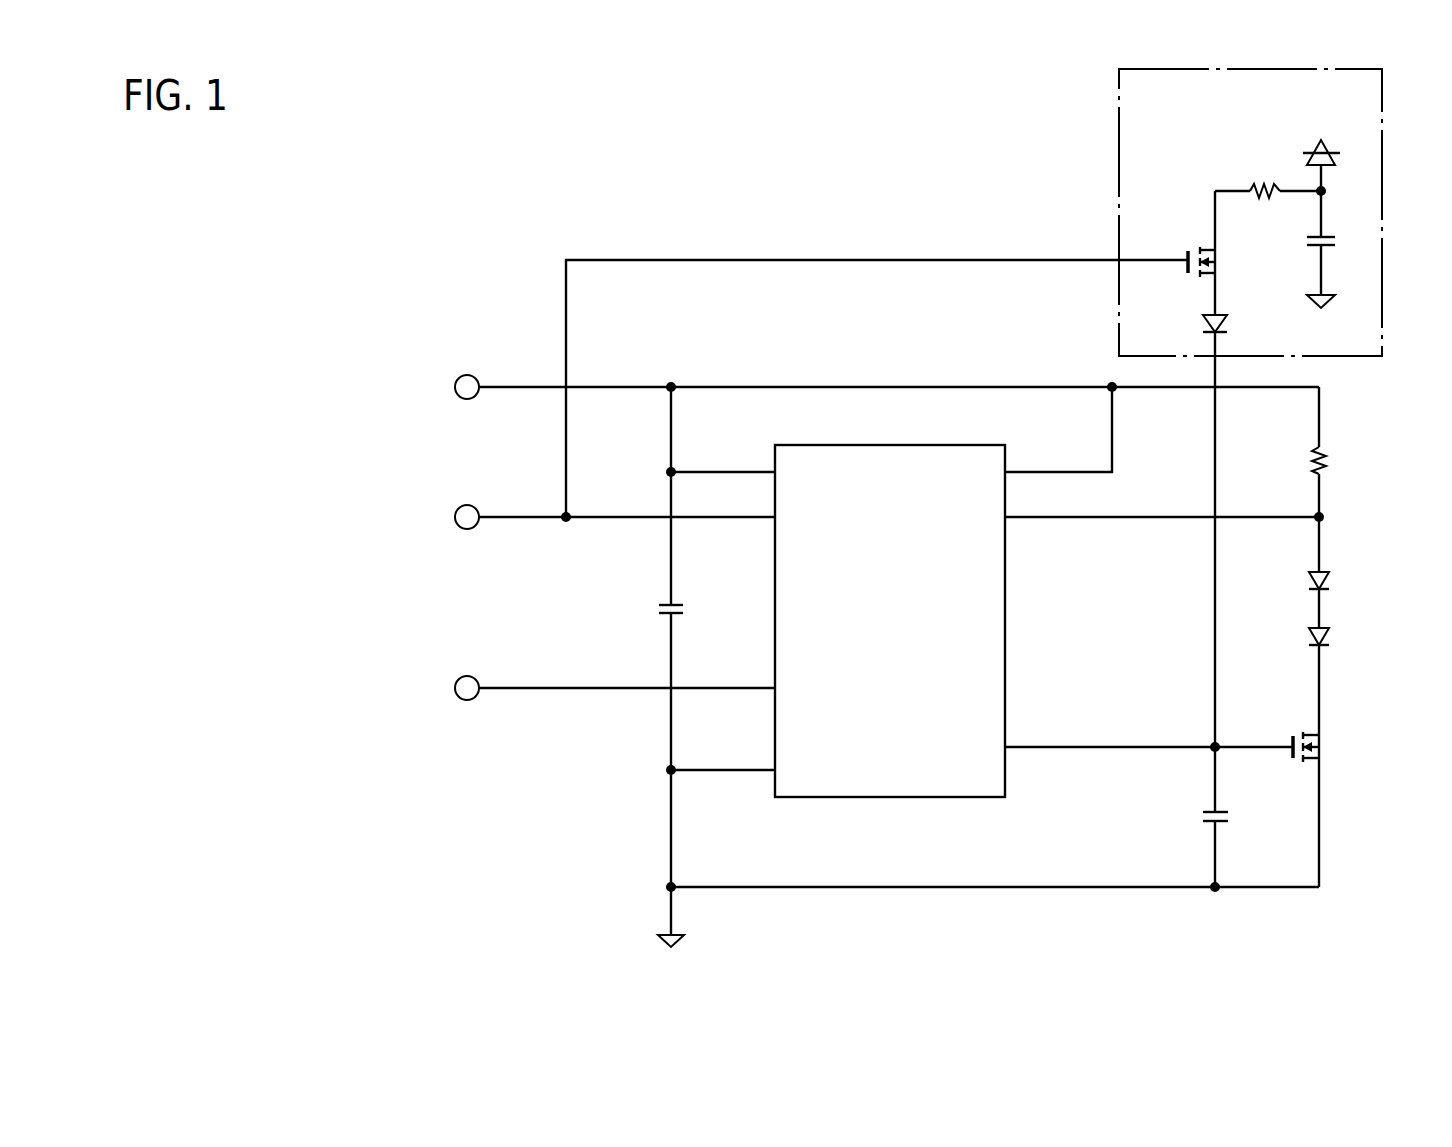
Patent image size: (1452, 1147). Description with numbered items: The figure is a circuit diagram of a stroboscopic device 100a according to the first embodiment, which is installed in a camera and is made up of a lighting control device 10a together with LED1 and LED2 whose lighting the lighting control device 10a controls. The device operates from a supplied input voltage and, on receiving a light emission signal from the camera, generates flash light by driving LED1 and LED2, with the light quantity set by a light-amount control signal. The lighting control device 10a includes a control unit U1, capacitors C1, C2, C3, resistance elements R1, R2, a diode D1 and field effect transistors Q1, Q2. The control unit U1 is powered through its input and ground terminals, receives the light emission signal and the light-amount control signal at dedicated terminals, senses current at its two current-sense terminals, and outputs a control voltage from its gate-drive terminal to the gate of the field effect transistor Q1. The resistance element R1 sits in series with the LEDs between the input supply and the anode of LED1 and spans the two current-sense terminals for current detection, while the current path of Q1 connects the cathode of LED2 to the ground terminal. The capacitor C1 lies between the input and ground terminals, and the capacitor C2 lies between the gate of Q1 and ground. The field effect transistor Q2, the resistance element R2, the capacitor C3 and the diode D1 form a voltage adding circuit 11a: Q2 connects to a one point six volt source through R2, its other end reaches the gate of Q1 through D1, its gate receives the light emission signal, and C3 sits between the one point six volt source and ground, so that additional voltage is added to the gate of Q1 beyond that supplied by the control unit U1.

The stroboscopic device 100a is at (982, 962).
The lighting control device 10a is at (843, 238).
The voltage adding circuit 11a is at (1119, 148).
The control unit U1 is at (890, 600).
The capacitor C1 is at (651, 637).
The capacitor C2 is at (1234, 817).
The capacitor C3 is at (1337, 241).
The resistance element R1 is at (1337, 460).
The resistance element R2 is at (1260, 169).
The field effect transistor Q1 is at (1327, 746).
The field effect transistor Q2 is at (1221, 260).
The diode D1 is at (1197, 326).
The LED LED1 is at (1359, 579).
The LED LED2 is at (1359, 635).